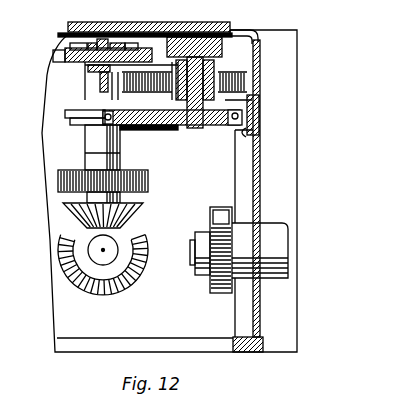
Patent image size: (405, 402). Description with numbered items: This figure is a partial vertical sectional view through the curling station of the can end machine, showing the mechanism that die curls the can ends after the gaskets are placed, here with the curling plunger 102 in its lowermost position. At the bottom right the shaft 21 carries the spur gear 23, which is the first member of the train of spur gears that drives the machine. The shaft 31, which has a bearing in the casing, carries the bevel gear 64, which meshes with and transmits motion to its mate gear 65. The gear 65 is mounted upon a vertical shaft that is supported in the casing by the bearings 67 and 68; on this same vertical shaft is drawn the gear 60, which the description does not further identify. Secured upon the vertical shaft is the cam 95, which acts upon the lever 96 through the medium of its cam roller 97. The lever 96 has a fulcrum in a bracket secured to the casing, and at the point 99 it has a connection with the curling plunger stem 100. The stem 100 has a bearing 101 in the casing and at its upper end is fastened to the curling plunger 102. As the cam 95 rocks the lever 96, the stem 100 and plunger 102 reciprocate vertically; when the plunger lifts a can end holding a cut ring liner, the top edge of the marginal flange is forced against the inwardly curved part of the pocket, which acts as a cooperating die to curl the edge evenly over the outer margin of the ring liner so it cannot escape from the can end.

The curling plunger 102 is at (159, 30).
The curling plunger stem 100 is at (205, 108).
The connection point 99 is at (196, 126).
The bearing 68 is at (86, 90).
The bearing 101 is at (171, 91).
The lever 96 is at (136, 126).
The cam 95 is at (73, 127).
The cam roller 97 is at (124, 133).
The bearing 67 is at (90, 153).
The gear 60 is at (149, 182).
The mate gear 65 is at (141, 209).
The bevel gear 64 is at (146, 252).
The shaft 31 is at (103, 254).
The spur gear 23 is at (212, 292).
The shaft 21 is at (195, 255).